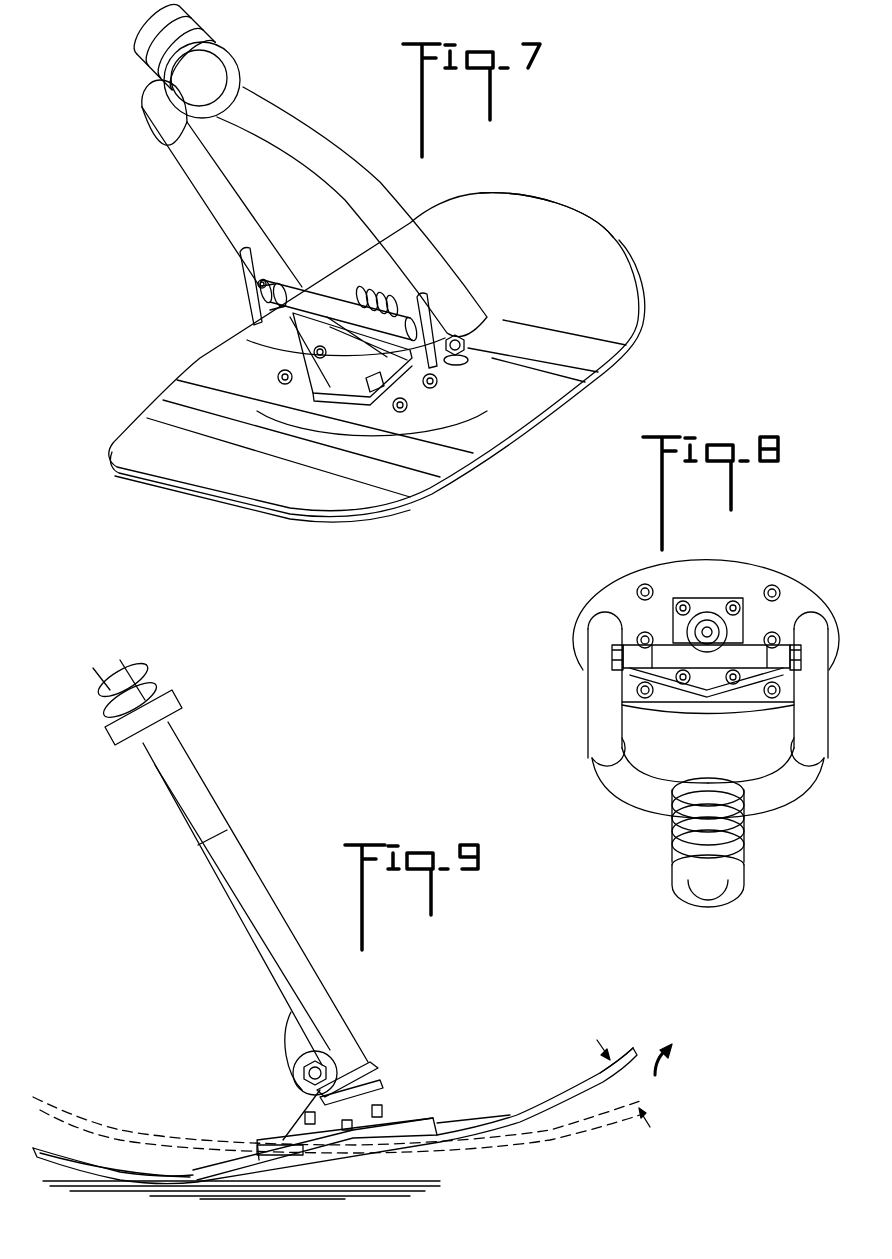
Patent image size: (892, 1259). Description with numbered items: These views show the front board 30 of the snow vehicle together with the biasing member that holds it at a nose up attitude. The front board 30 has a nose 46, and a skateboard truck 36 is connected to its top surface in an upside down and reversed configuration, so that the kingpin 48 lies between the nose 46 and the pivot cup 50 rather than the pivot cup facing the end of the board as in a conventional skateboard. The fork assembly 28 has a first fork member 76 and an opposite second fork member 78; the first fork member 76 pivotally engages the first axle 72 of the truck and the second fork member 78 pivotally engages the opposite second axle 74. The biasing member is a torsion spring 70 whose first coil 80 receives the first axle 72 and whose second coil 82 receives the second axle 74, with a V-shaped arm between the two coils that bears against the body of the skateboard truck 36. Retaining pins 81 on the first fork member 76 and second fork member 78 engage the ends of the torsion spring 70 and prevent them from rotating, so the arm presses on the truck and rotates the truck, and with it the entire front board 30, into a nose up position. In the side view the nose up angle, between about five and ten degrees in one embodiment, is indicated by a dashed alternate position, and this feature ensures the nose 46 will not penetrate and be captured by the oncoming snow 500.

In FIG. 7, the fork assembly 28 is at (270, 74).
In FIG. 8, the fork assembly 28 is at (655, 862).
In FIG. 9, the fork assembly 28 is at (225, 777).
In FIG. 7, the front board 30 is at (626, 222).
In FIG. 9, the front board 30 is at (530, 1088).
In FIG. 7, the skateboard truck 36 is at (344, 284).
In FIG. 8, the skateboard truck 36 is at (728, 583).
In FIG. 7, the nose 46 is at (567, 203).
In FIG. 9, the nose 46 is at (635, 1046).
In FIG. 7, the kingpin 48 is at (366, 291).
In FIG. 7, the pivot cup 50 is at (345, 378).
In FIG. 7, the torsion spring 70 is at (335, 388).
In FIG. 8, the torsion spring 70 is at (713, 693).
In FIG. 9, the torsion spring 70 is at (287, 1140).
In FIG. 7, the first axle 72 is at (255, 333).
In FIG. 8, the first axle 72 is at (640, 653).
In FIG. 7, the second axle 74 is at (400, 350).
In FIG. 8, the second axle 74 is at (773, 653).
In FIG. 7, the first fork member 76 is at (223, 203).
In FIG. 8, the first fork member 76 is at (610, 717).
In FIG. 7, the second fork member 78 is at (380, 220).
In FIG. 8, the second fork member 78 is at (813, 718).
In FIG. 9, the second fork member 78 is at (262, 925).
In FIG. 7, the first coil 80 is at (285, 302).
In FIG. 8, the first coil 80 is at (625, 657).
In FIG. 7, the retaining pins 81 is at (257, 287).
In FIG. 7, the second coil 82 is at (448, 368).
In FIG. 8, the second coil 82 is at (792, 660).
In FIG. 9, the snow 500 is at (410, 1200).